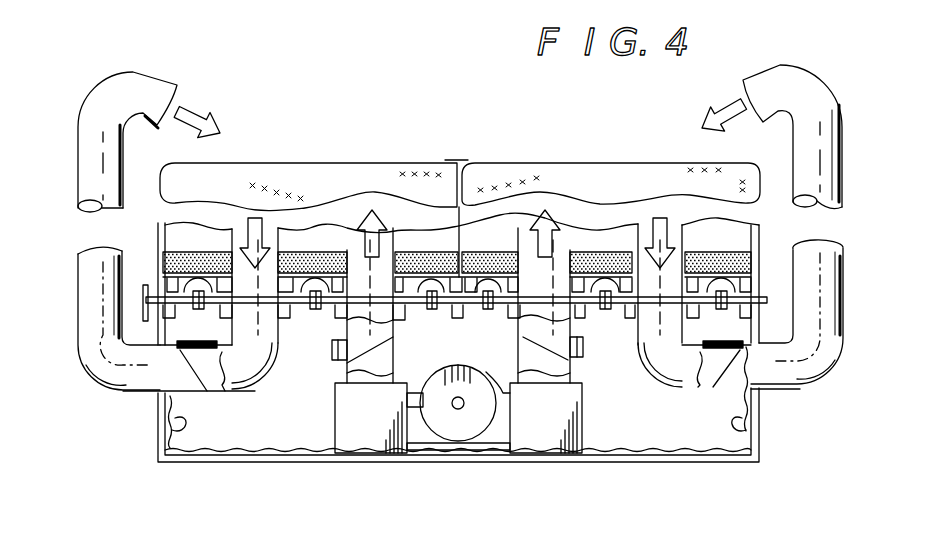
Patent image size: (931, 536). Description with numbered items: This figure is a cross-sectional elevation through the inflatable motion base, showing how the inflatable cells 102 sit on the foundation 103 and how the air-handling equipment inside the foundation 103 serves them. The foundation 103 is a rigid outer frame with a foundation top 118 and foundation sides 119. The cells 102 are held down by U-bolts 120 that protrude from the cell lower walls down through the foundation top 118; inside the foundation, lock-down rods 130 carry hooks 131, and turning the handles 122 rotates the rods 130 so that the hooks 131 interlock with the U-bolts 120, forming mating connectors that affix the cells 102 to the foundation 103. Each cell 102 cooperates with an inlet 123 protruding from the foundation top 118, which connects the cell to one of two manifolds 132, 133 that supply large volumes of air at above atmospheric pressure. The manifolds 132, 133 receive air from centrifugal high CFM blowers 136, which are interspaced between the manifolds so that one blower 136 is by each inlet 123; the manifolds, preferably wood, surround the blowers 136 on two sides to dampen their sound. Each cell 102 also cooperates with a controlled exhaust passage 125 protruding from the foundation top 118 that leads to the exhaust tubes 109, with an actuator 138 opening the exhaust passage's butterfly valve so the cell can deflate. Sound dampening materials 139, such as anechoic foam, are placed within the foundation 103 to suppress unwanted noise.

The inflatable cells 102 is at (236, 163).
The foundation 103 is at (642, 437).
The exhaust tubes 109 is at (88, 356).
The foundation top 118 is at (763, 228).
The foundation sides 119 is at (761, 458).
The U-bolts 120 is at (160, 290).
The handles 122 is at (144, 299).
The inlet 123 is at (396, 235).
The exhaust passage 125 is at (233, 378).
The lock-down rods 130 is at (633, 273).
The hooks 131 is at (347, 253).
The manifold 132 is at (362, 445).
The manifold 133 is at (542, 442).
The centrifugal high CFM blowers 136 is at (418, 435).
The actuator 138 is at (276, 343).
The sound dampening materials 139 is at (170, 420).